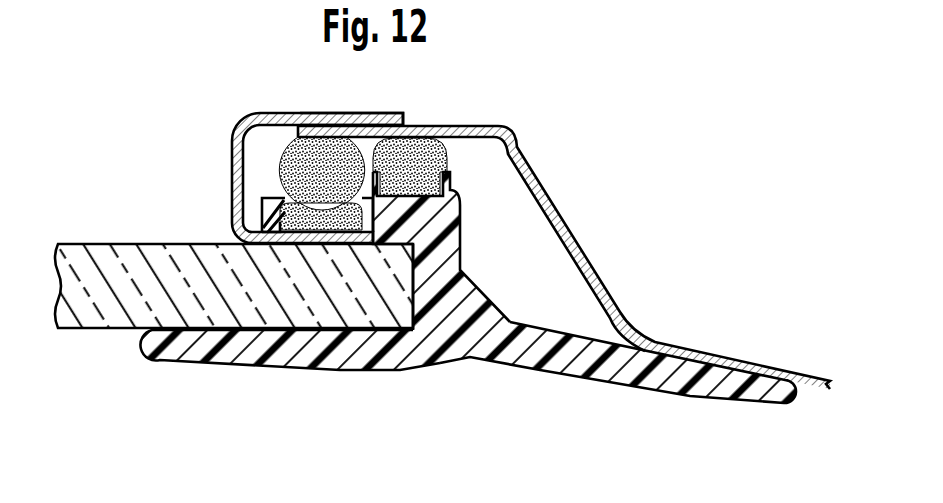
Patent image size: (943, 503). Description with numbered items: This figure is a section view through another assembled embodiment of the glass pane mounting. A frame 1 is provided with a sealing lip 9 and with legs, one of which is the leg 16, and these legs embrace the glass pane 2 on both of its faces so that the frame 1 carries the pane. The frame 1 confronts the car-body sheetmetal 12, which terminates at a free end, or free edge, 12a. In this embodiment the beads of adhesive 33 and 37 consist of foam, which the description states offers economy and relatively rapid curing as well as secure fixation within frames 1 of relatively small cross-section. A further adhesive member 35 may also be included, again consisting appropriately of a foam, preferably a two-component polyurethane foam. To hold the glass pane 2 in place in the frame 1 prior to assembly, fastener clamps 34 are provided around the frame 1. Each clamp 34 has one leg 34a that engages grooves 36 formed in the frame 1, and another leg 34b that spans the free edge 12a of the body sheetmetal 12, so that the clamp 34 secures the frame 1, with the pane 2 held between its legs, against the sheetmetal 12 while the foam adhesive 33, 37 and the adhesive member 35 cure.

The frame 1 is at (459, 366).
The glass pane 2 is at (105, 300).
The sealing lip 9 is at (715, 383).
The car-body sheetmetal 12 is at (600, 265).
The free end of the body sheetmetal 12a is at (318, 126).
The leg 16 is at (184, 345).
The bead of adhesive 33 is at (288, 158).
The fastener clamp 34 is at (232, 200).
The clamp leg 34a is at (362, 232).
The clamp leg 34b is at (382, 118).
The adhesive member 35 is at (433, 150).
The groove 36 is at (282, 244).
The bead of adhesive 37 is at (330, 246).